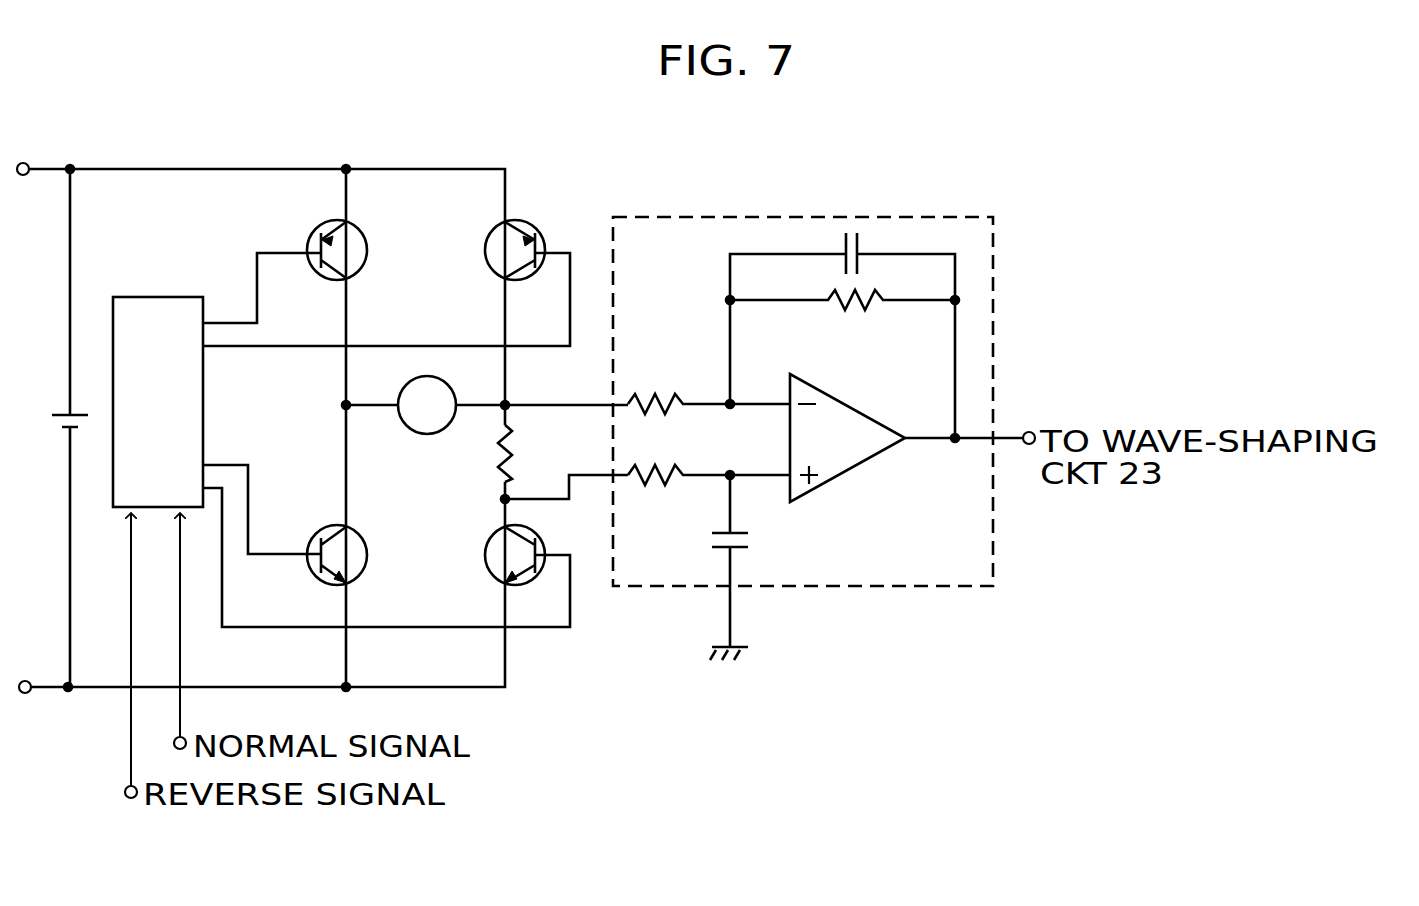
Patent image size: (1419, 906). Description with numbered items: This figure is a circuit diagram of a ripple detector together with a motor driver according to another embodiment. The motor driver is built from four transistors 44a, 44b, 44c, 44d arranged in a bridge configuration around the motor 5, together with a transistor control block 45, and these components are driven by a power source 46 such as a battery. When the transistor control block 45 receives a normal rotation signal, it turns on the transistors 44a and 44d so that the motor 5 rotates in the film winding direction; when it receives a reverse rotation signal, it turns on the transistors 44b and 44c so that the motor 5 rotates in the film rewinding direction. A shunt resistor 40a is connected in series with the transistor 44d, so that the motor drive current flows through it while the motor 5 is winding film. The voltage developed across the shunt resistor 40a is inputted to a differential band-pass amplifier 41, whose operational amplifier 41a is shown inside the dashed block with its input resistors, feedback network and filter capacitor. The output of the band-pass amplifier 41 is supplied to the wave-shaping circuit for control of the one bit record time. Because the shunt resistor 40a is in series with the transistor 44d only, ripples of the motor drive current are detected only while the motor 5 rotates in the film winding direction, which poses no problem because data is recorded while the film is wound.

The motor 5 is at (427, 434).
The shunt resistor 40a is at (512, 450).
The differential band-pass amplifier 41 is at (803, 388).
The operational amplifier 41a is at (845, 460).
The transistor 44a is at (365, 232).
The transistor 44b is at (525, 226).
The transistor 44c is at (312, 578).
The transistor 44d is at (488, 572).
The transistor control block 45 is at (163, 297).
The power source 46 is at (55, 428).